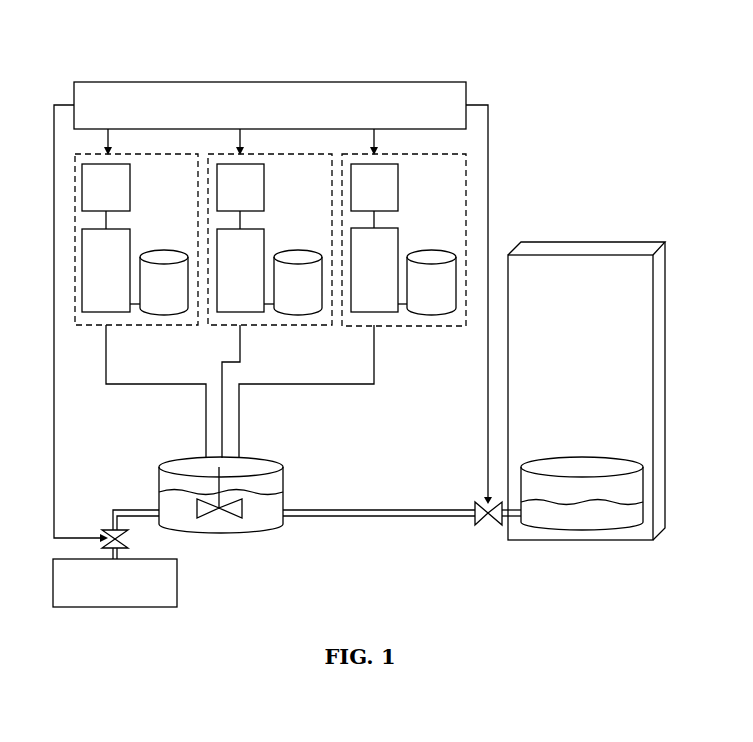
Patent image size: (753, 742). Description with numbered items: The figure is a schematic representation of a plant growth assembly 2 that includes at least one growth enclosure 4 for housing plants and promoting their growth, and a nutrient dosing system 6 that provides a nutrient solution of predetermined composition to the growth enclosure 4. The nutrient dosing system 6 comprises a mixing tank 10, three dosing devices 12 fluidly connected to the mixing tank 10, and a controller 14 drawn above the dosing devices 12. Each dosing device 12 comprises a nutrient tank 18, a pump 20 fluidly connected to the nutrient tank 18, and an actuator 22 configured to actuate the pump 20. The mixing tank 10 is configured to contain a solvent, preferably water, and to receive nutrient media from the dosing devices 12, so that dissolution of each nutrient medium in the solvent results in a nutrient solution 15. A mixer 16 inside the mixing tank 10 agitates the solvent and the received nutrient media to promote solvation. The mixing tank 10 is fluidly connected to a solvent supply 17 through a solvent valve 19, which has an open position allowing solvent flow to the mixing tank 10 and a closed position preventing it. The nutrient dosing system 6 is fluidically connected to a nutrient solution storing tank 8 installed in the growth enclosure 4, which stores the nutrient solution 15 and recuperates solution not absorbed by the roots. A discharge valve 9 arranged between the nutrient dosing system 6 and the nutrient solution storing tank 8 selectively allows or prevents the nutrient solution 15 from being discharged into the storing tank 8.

The plant growth assembly 2 is at (562, 32).
The growth enclosure 4 is at (585, 241).
The nutrient dosing system 6 is at (325, 60).
The nutrient solution storing tank 8 is at (580, 458).
The discharge valve 9 is at (478, 523).
The mixing tank 10 is at (276, 460).
The dosing device 12 is at (469, 170).
The controller 14 is at (270, 105).
The nutrient solution 15 is at (271, 510).
The mixer 16 is at (243, 501).
The solvent supply 17 is at (115, 583).
The nutrient tank 18 is at (298, 282).
The solvent valve 19 is at (104, 528).
The pump 20 is at (244, 270).
The actuator 22 is at (240, 196).